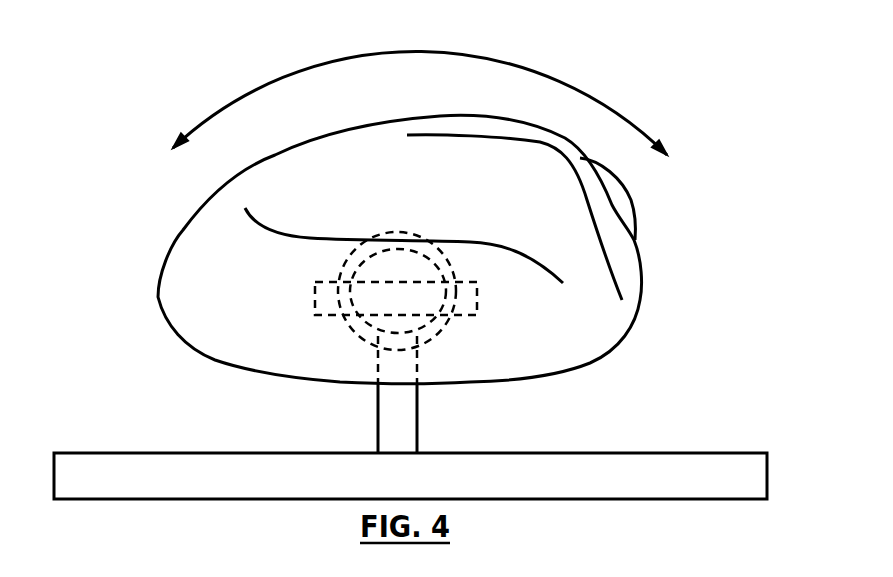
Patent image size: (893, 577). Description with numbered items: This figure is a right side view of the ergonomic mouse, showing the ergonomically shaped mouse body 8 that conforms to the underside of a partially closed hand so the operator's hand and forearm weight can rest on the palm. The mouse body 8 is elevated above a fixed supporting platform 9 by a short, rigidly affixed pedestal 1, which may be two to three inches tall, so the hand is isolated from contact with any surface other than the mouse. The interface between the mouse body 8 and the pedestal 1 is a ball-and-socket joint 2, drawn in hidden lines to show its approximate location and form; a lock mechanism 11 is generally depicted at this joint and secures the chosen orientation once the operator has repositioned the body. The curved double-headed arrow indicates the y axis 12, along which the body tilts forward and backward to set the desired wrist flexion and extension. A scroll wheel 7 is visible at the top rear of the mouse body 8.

The pedestal 1 is at (378, 423).
The ball-and-socket joint 2 is at (428, 332).
The scroll wheel 7 is at (633, 203).
The ergonomic mouse body 8 is at (158, 297).
The supporting platform 9 is at (767, 472).
The lock mechanism 11 is at (477, 313).
The y axis 12 is at (428, 103).